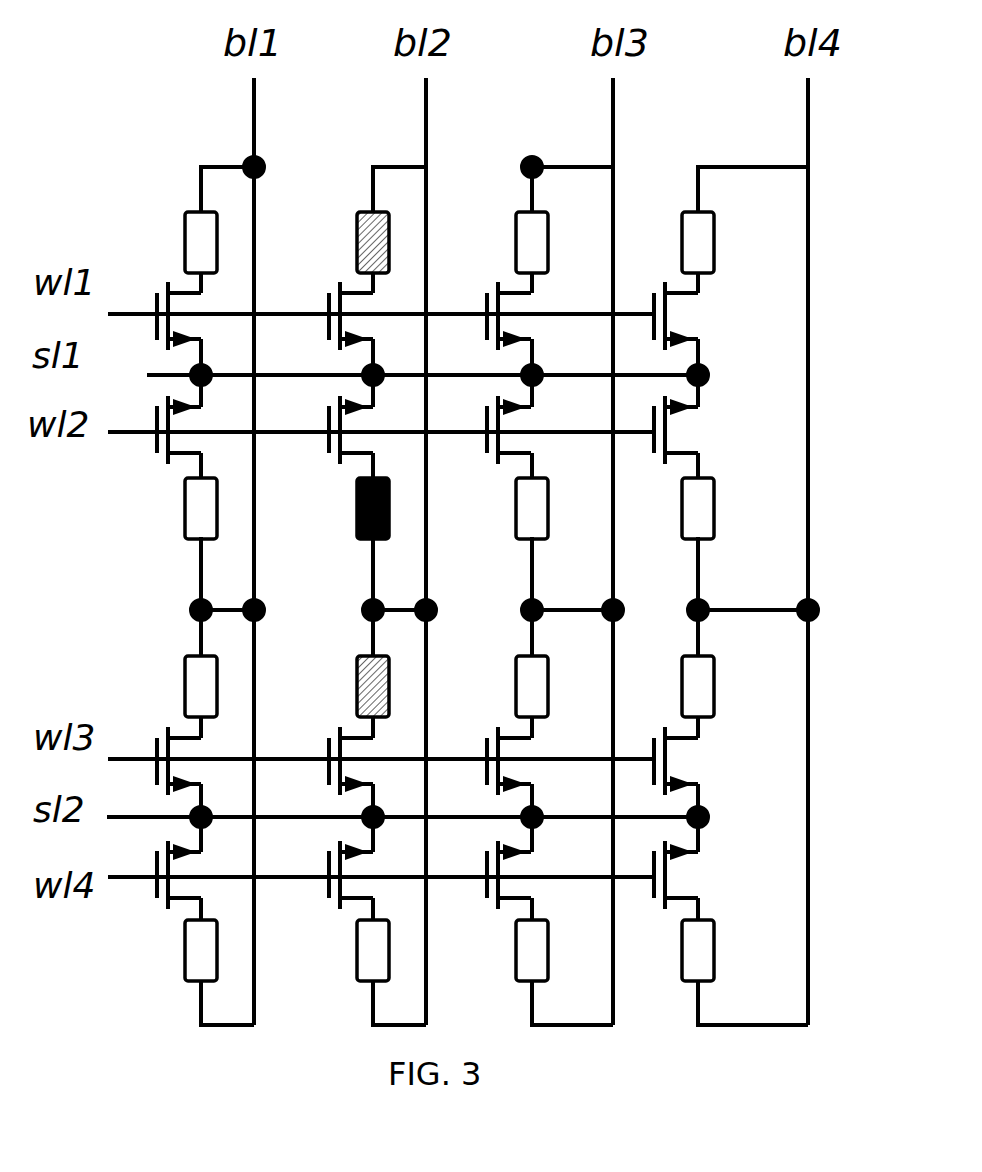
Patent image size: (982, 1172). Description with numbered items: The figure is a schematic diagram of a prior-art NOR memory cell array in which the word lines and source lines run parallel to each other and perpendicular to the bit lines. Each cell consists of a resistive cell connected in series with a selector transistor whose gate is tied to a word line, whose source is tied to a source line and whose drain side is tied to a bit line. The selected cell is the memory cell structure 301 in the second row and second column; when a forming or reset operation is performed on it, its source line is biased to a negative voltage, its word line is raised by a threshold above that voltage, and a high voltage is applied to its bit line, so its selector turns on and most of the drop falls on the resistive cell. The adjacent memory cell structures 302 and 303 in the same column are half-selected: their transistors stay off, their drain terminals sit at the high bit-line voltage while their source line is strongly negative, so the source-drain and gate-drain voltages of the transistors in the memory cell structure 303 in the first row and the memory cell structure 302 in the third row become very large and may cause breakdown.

The memory cell structure 301 is at (339, 508).
The memory cell structure 302 is at (340, 686).
The memory cell structure 303 is at (339, 242).